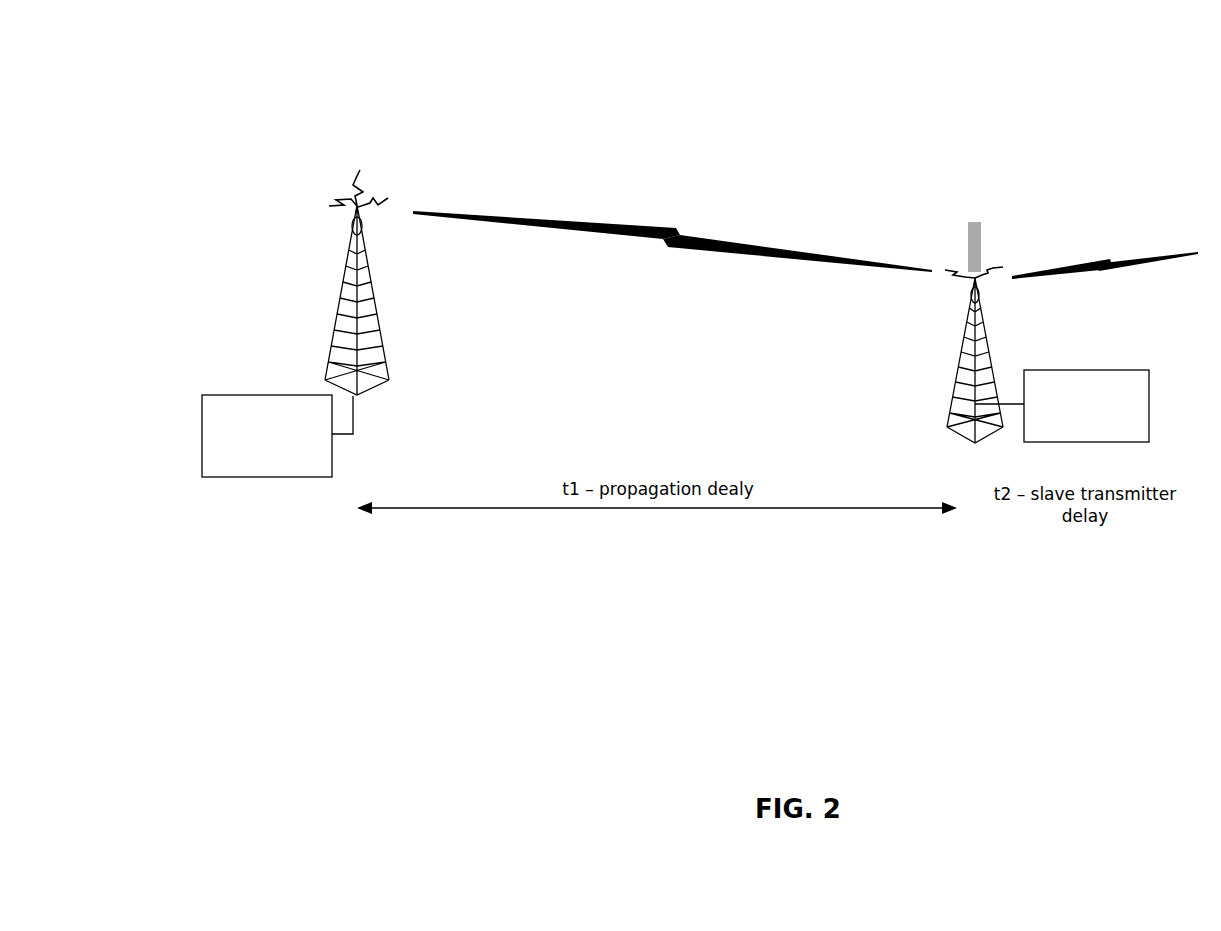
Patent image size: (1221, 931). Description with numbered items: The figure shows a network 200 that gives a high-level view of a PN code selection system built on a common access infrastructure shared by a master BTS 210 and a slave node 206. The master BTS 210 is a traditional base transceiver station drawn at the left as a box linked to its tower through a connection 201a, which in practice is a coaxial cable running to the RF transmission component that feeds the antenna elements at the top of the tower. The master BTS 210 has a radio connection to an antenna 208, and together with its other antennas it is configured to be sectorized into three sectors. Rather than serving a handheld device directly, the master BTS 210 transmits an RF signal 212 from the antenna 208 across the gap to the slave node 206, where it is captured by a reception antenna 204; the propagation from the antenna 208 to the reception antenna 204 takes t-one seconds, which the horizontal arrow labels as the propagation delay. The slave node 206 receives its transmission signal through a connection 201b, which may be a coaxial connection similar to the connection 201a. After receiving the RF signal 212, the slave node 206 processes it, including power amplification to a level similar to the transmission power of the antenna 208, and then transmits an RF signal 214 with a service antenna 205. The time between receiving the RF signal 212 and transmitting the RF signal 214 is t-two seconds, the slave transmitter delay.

The network 200 is at (403, 624).
The connection 201a is at (353, 434).
The connection 201b is at (1008, 408).
The reception antenna 204 is at (940, 262).
The service antenna 205 is at (995, 280).
The slave node 206 is at (1087, 442).
The antenna 208 is at (380, 210).
The master BTS 210 is at (233, 477).
The RF signal 212 is at (670, 244).
The RF signal 214 is at (1088, 266).